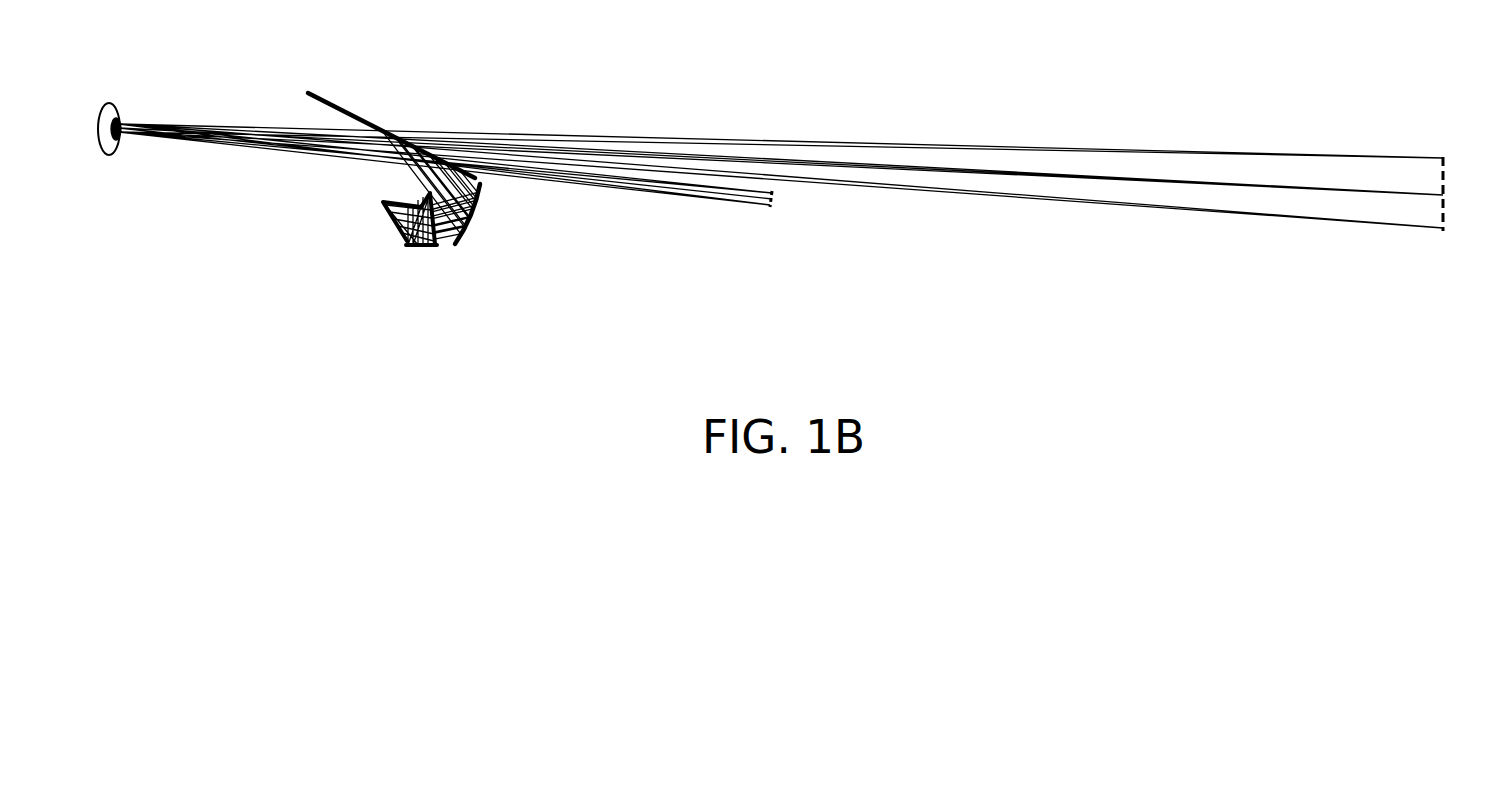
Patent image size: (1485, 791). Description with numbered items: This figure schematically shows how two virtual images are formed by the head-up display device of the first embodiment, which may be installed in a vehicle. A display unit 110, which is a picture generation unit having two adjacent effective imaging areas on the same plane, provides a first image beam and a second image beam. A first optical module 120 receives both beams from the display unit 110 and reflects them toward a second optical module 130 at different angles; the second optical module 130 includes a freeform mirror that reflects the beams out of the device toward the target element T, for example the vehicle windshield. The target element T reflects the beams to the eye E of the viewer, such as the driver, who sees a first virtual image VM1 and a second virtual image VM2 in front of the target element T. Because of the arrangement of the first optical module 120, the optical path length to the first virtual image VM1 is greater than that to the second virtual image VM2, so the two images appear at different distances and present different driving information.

The eye E is at (118, 102).
The target element T is at (347, 112).
The first optical module 120 is at (411, 252).
The display unit 110 is at (408, 246).
The second optical module 130 is at (457, 241).
The first virtual image VM1 is at (1447, 162).
The second virtual image VM2 is at (776, 209).